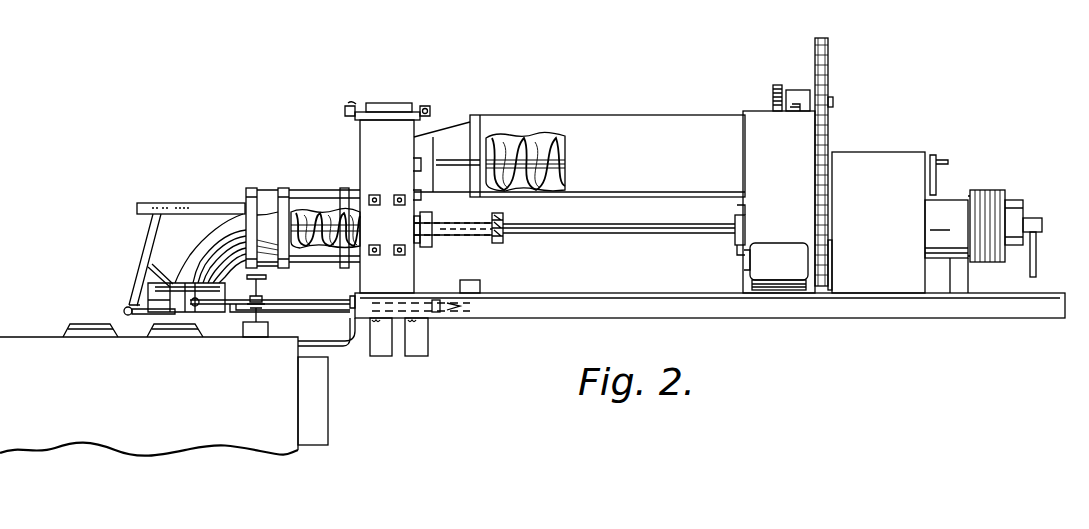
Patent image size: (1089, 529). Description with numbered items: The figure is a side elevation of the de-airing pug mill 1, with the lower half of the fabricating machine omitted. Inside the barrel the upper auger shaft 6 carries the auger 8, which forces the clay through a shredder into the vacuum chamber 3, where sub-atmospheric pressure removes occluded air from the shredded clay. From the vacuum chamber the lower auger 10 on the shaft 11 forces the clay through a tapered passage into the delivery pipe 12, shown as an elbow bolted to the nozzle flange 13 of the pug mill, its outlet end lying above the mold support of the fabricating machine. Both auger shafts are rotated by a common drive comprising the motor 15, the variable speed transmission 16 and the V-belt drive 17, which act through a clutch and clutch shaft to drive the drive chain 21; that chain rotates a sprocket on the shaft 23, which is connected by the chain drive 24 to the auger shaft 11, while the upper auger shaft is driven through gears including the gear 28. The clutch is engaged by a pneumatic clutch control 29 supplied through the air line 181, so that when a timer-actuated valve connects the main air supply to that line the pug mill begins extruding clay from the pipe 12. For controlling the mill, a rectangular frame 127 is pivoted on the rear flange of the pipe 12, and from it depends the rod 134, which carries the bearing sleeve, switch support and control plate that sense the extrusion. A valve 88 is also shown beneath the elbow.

The pug mill 1 is at (617, 80).
The vacuum chamber 3 is at (372, 140).
The auger shaft 6 is at (557, 150).
The auger 8 is at (515, 148).
The lower auger 10 is at (312, 208).
The shaft 11 is at (460, 232).
The delivery pipe 12 is at (198, 225).
The nozzle flange 13 is at (275, 178).
The motor 15 is at (773, 252).
The variable speed transmission 16 is at (868, 160).
The V-belt drive 17 is at (1003, 174).
The drive chain 21 is at (835, 14).
The shaft 23 is at (597, 234).
The chain drive 24 is at (497, 244).
The gear 28 is at (788, 66).
The pneumatic clutch control 29 is at (1020, 203).
The valve 88 is at (212, 302).
The rectangular frame 127 is at (145, 203).
The rod 134 is at (137, 250).
The air line 181 is at (1033, 272).